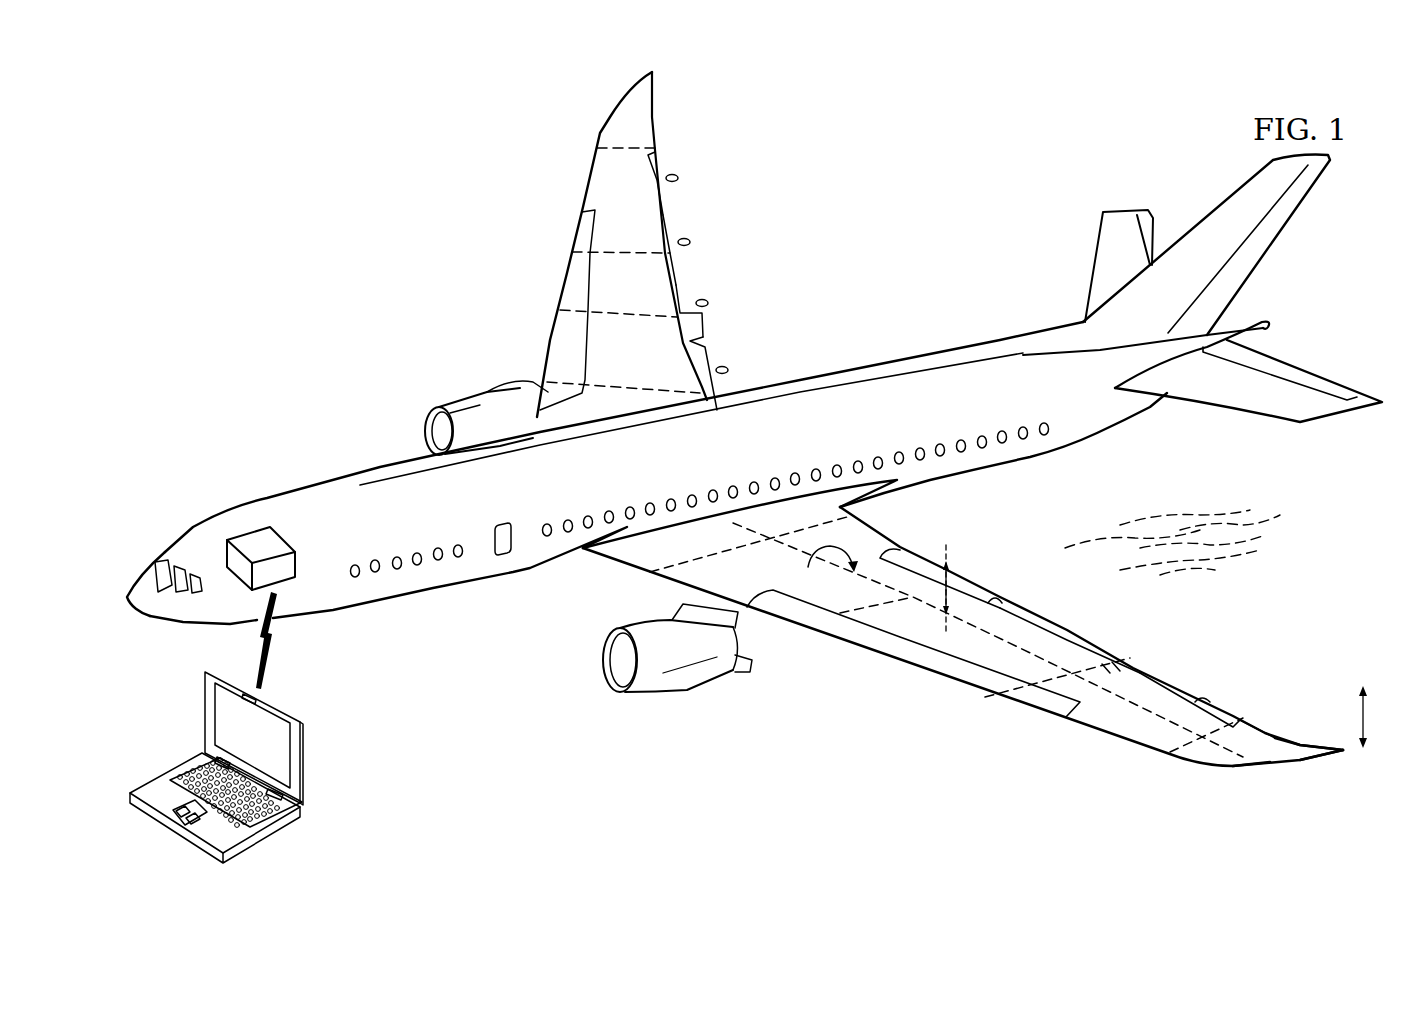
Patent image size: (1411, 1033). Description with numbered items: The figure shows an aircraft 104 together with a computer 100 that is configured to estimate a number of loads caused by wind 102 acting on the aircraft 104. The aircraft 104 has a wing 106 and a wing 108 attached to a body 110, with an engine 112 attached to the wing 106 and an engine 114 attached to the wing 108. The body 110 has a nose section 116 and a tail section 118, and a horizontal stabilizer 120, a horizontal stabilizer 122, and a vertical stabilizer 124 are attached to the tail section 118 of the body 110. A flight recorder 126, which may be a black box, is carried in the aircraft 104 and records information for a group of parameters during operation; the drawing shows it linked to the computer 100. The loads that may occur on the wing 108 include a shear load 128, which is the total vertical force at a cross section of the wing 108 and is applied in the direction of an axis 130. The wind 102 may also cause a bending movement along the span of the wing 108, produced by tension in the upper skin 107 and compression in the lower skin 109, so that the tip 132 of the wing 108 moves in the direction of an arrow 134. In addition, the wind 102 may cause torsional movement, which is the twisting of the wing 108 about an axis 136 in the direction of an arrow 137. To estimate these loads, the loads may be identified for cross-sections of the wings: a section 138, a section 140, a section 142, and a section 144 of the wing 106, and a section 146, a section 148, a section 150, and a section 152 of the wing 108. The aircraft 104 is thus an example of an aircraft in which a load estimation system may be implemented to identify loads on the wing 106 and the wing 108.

The computer 100 is at (203, 712).
The wind 102 is at (1208, 583).
The aircraft 104 is at (343, 376).
The wing 106 is at (582, 178).
The upper skin 107 is at (1303, 749).
The wing 108 is at (1068, 724).
The lower skin 109 is at (1253, 765).
The body 110 is at (292, 489).
The engine 112 is at (463, 393).
The engine 114 is at (688, 689).
The nose section 116 is at (160, 523).
The tail section 118 is at (1154, 462).
The horizontal stabilizer 120 is at (1097, 262).
The horizontal stabilizer 122 is at (1252, 412).
The vertical stabilizer 124 is at (1277, 238).
The flight recorder 126 is at (282, 537).
The shear load 128 is at (950, 585).
The axis 130 is at (950, 552).
The tip 132 is at (1317, 763).
The arrow 134 is at (1363, 688).
The axis 136 is at (1160, 720).
The arrow 137 is at (810, 544).
The section 138 is at (680, 365).
The section 140 is at (657, 290).
The section 142 is at (645, 205).
The section 144 is at (640, 128).
The section 146 is at (863, 533).
The section 148 is at (1033, 640).
The section 150 is at (1160, 703).
The section 152 is at (1265, 742).